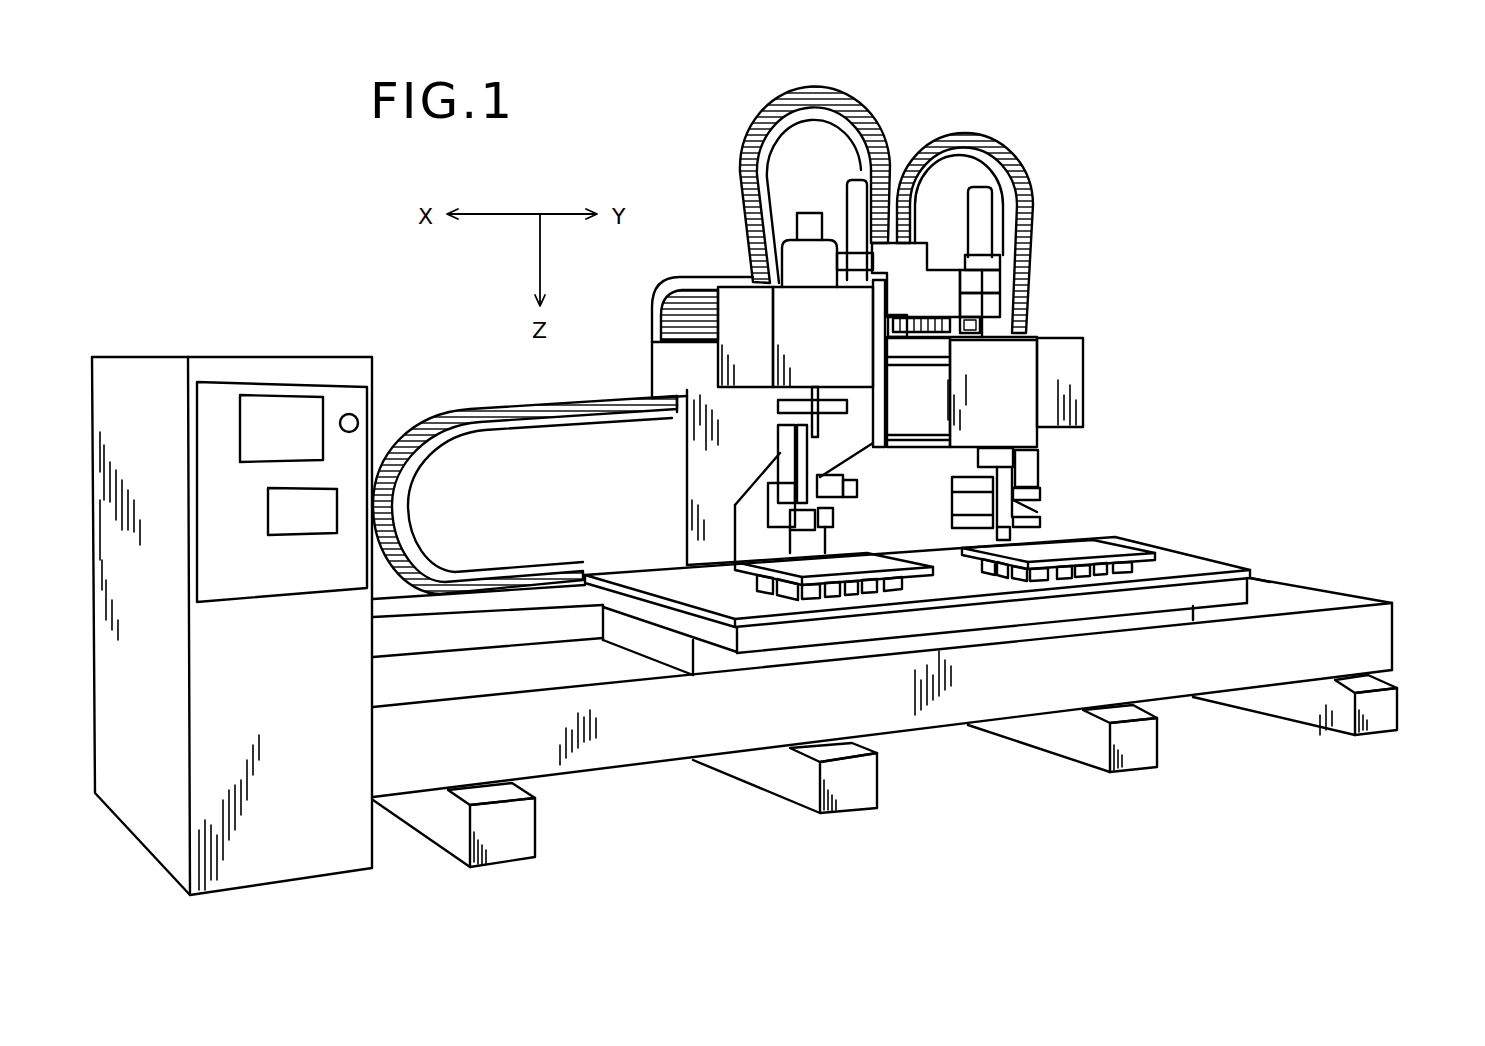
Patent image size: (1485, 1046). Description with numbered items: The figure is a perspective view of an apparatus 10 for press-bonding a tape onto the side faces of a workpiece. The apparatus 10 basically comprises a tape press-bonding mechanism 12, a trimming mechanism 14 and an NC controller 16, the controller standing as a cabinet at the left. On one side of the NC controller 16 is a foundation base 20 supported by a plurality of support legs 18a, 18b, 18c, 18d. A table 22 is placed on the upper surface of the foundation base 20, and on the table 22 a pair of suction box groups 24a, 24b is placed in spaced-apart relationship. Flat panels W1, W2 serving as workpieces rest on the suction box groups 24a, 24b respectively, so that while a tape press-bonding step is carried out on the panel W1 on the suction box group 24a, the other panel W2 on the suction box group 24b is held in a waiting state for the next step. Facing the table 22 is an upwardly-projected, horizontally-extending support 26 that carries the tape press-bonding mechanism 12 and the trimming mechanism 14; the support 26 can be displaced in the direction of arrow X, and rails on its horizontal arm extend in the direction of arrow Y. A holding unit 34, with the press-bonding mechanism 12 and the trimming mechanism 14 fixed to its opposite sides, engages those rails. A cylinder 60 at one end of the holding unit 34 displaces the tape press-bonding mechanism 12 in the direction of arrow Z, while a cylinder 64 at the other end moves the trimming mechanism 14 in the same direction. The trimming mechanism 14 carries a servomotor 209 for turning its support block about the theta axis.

The apparatus 10 is at (1108, 366).
The tape press-bonding mechanism 12 is at (1058, 336).
The trimming mechanism 14 is at (806, 312).
The NC controller 16 is at (298, 356).
The support leg 18a is at (525, 823).
The support leg 18b is at (858, 790).
The support leg 18c is at (1147, 760).
The support leg 18d is at (1383, 717).
The foundation base 20 is at (1378, 633).
The table 22 is at (1172, 568).
The suction box group 24a is at (830, 600).
The suction box group 24b is at (1062, 592).
The support 26 is at (702, 506).
The holding unit 34 is at (925, 295).
The cylinder 60 is at (1010, 180).
The cylinder 64 is at (882, 140).
The servomotor 209 is at (812, 218).
The panel W1 is at (840, 567).
The panel W2 is at (1087, 551).